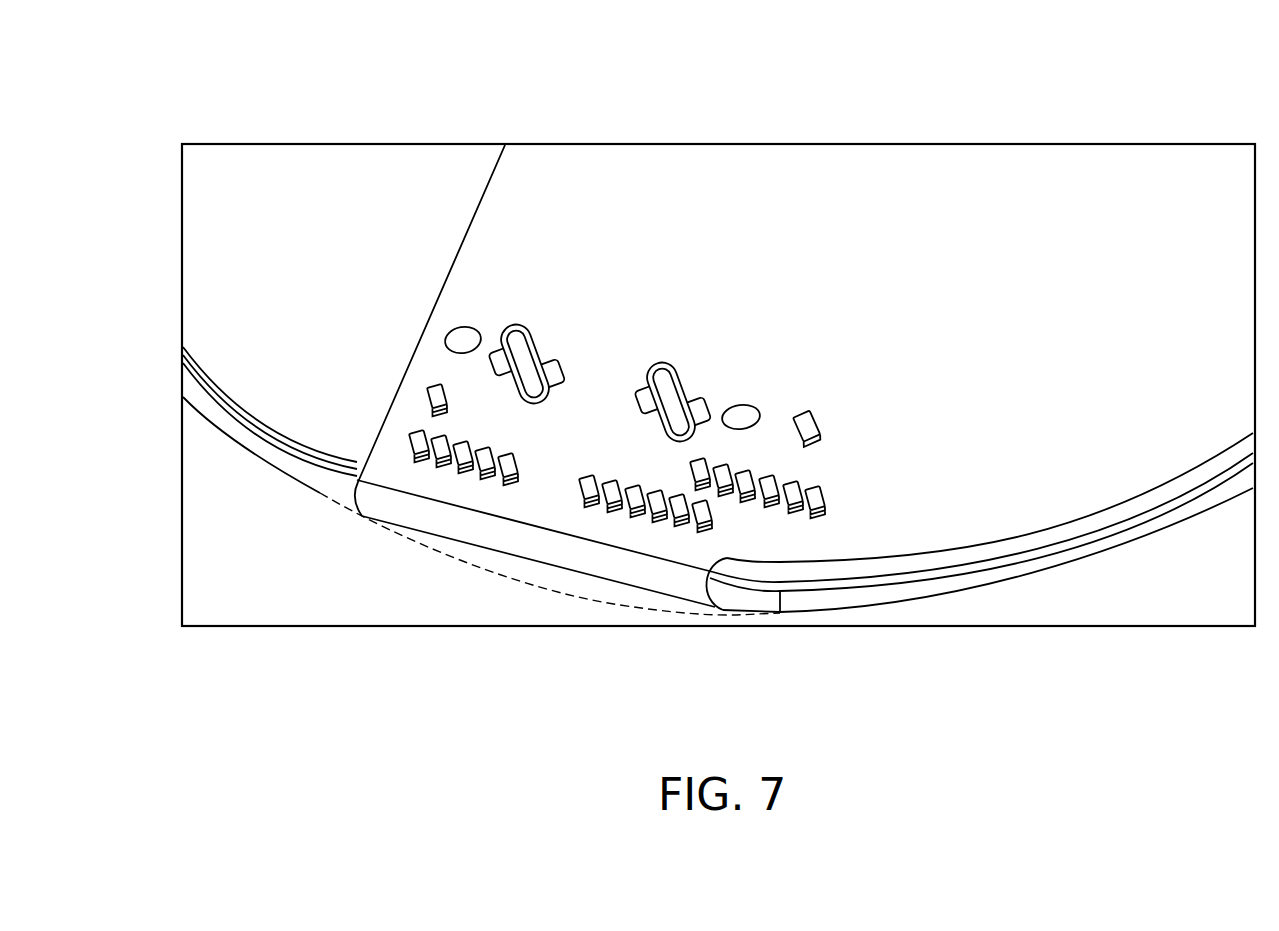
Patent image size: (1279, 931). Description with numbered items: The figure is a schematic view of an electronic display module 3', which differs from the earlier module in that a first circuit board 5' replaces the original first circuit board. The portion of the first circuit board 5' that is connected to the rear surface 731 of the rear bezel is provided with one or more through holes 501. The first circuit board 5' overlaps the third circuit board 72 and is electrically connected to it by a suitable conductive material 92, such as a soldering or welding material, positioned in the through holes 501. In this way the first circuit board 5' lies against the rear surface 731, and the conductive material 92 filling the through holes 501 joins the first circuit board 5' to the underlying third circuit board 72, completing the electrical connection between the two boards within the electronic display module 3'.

The electronic display module 3' is at (676, 324).
The rear surface 731 is at (333, 188).
The through holes 501 is at (503, 343).
The third circuit board 72 is at (497, 369).
The conductive material 92 is at (495, 368).
The first circuit board 5' is at (592, 531).